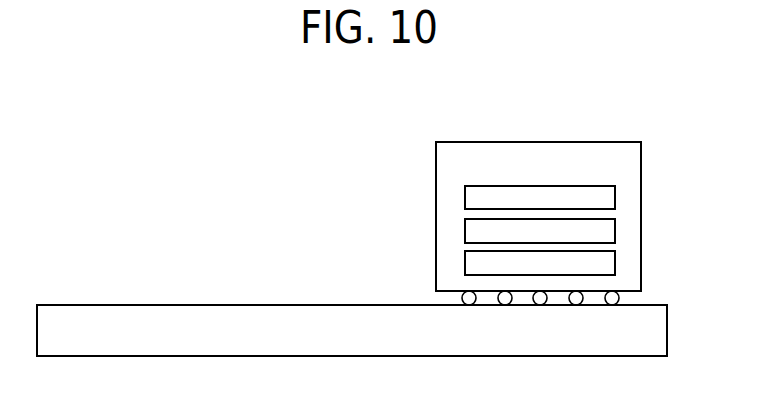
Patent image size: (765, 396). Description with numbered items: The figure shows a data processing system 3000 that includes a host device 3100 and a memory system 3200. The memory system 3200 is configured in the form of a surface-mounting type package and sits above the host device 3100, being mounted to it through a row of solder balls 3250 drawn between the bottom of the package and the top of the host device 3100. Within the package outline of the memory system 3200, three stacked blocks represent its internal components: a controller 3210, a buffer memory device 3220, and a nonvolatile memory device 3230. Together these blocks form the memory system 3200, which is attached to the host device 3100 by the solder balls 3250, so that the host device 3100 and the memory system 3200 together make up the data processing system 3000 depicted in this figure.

The data processing system 3000 is at (178, 113).
The host device 3100 is at (352, 330).
The memory system 3200 is at (538, 216).
The controller 3210 is at (540, 199).
The buffer memory device 3220 is at (540, 232).
The nonvolatile memory device 3230 is at (540, 264).
The solder balls 3250 is at (628, 299).